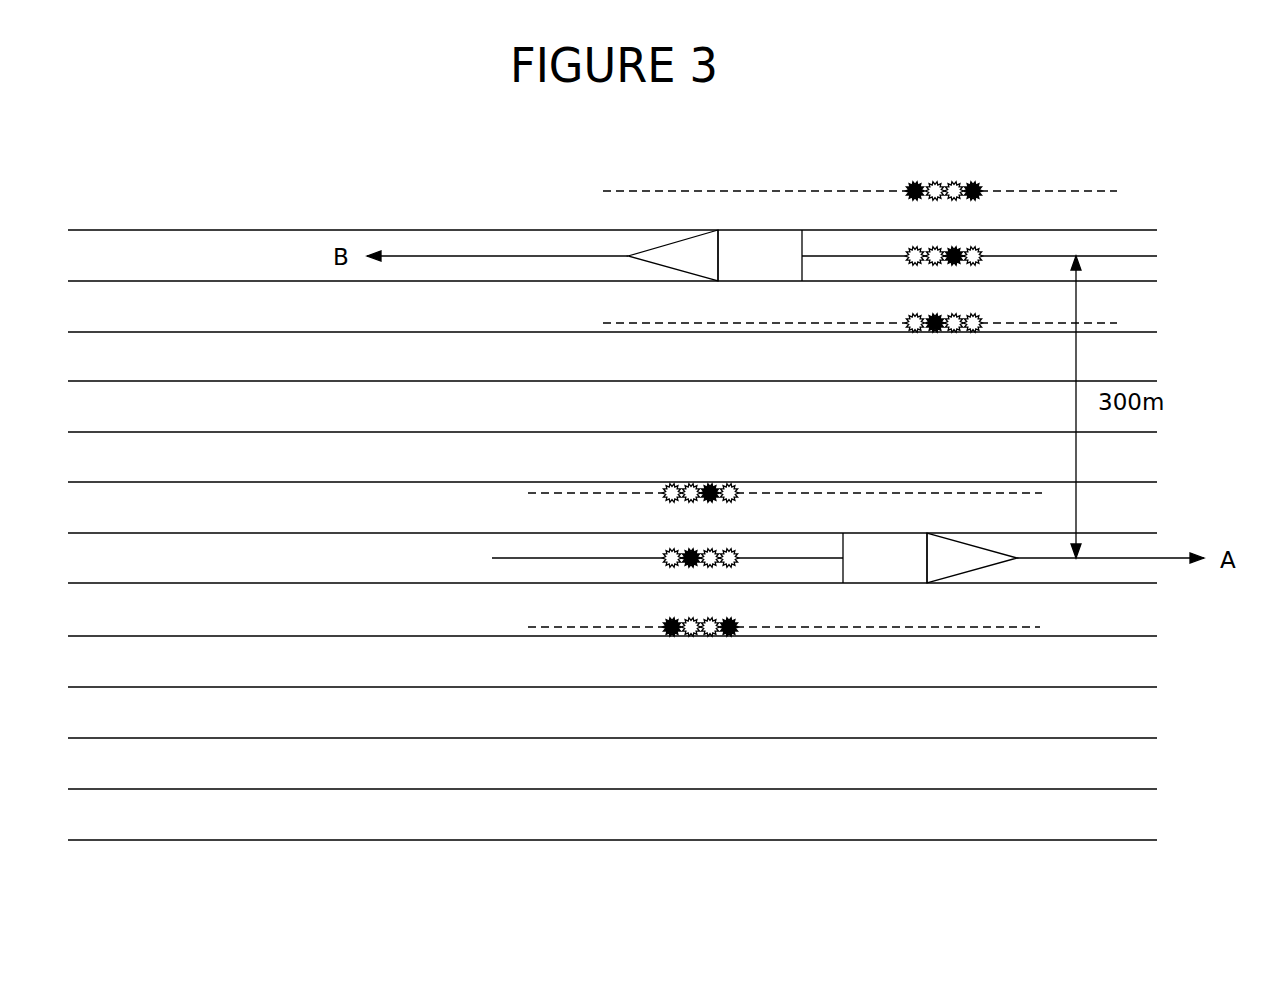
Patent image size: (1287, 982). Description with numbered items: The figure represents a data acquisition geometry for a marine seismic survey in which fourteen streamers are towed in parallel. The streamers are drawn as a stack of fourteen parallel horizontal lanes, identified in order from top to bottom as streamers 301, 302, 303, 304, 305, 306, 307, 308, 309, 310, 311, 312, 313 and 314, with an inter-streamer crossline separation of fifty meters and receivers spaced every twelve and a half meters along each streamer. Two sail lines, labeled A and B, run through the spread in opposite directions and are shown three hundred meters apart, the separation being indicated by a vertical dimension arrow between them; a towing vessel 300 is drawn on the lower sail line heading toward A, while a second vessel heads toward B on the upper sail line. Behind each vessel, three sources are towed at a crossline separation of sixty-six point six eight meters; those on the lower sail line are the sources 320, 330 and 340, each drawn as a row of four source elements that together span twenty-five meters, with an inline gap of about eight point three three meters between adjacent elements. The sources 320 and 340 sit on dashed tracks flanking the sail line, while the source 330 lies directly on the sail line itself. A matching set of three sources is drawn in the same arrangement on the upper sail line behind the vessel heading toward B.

The vehicle A 300 is at (975, 572).
The lane 301 is at (612, 215).
The lane 302 is at (612, 266).
The lane 303 is at (612, 317).
The lane 304 is at (612, 366).
The lane 305 is at (612, 416).
The lane 306 is at (612, 466).
The lane 307 is at (612, 517).
The lane 308 is at (612, 567).
The lane 309 is at (612, 621).
The source 310 is at (612, 672).
The lane 311 is at (612, 723).
The lane 312 is at (612, 771).
The lane 313 is at (612, 825).
The lane 314 is at (612, 859).
The source 320 is at (731, 484).
The source 330 is at (731, 566).
The traffic track 340 is at (732, 636).